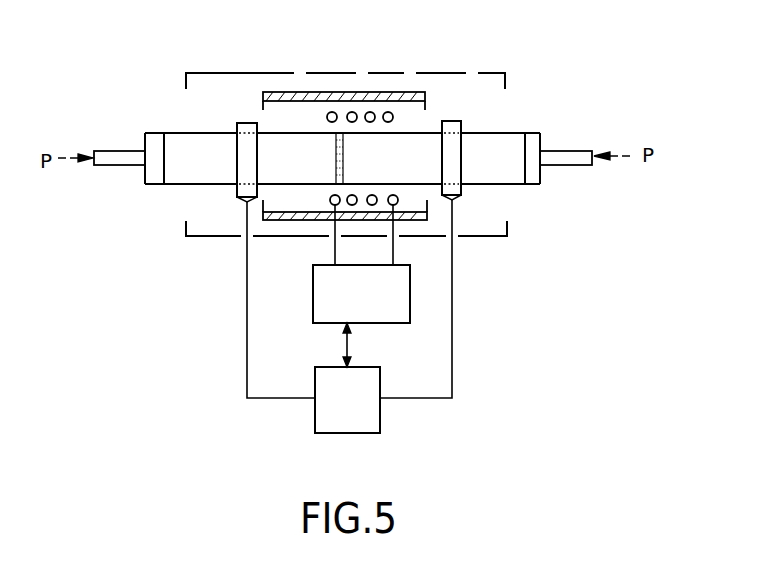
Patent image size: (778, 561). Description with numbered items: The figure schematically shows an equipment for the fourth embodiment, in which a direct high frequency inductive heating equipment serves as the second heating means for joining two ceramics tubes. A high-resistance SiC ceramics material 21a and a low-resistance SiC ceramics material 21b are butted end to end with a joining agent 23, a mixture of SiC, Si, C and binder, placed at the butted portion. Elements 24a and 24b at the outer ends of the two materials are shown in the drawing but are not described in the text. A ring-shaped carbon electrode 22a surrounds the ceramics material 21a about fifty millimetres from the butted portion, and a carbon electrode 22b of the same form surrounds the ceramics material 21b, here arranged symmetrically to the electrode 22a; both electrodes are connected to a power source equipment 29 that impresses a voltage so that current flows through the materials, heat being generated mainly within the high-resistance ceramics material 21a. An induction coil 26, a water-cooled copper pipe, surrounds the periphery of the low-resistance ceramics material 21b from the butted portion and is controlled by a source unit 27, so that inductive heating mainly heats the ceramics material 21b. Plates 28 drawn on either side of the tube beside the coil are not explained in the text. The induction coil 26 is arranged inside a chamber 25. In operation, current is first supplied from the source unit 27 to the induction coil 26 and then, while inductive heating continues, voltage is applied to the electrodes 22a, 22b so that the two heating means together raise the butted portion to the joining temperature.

The ceramics material 21a is at (190, 143).
The ceramics material 21b is at (503, 140).
The carbon electrode 22a is at (247, 128).
The carbon electrode 22b is at (457, 192).
The joining agent 23 is at (338, 157).
The first piston 24a is at (160, 178).
The second piston 24b is at (537, 177).
The chamber 25 is at (472, 73).
The induction coil 26 is at (352, 112).
The source unit 27 is at (412, 298).
The yoke plate 28 is at (409, 92).
The power source equipment 29 is at (318, 417).